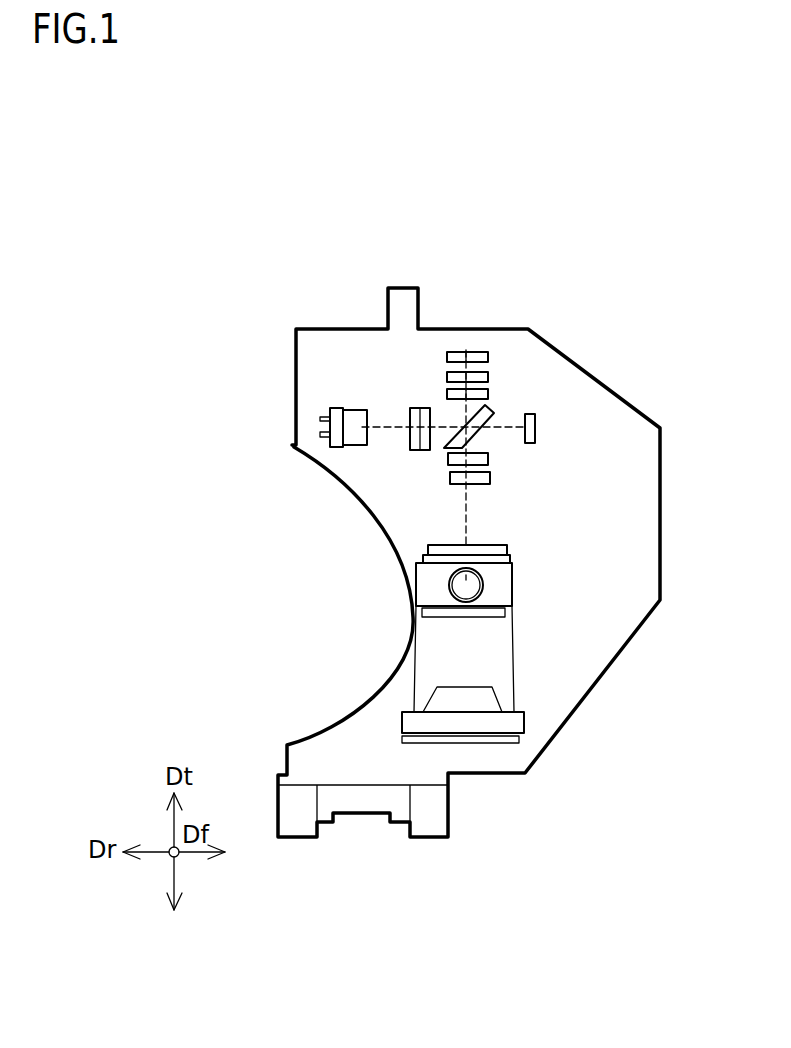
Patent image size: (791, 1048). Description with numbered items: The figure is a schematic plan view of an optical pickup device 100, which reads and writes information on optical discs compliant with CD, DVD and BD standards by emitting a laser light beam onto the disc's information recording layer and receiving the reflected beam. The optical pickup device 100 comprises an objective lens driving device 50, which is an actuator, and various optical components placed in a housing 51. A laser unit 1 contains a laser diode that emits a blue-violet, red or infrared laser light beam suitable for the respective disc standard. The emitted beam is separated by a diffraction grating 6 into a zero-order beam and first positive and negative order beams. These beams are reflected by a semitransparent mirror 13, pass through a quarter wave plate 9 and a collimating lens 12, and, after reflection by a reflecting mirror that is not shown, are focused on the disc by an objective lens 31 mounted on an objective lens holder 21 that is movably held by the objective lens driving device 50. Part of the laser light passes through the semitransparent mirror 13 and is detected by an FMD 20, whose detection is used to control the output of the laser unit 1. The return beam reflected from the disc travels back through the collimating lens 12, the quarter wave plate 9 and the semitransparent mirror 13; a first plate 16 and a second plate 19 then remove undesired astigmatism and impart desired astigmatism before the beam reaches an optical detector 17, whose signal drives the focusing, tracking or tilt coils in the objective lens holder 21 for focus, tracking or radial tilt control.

The optical pickup device 100 is at (403, 220).
The housing 51 is at (296, 384).
The laser unit 1 is at (337, 406).
The diffraction grating 6 is at (431, 407).
The optical detector 17 is at (488, 352).
The second plate 19 is at (488, 372).
The first plate 16 is at (489, 391).
The semitransparent mirror 13 is at (493, 411).
The FMD 20 is at (534, 416).
The quarter wave plate 9 is at (488, 460).
The collimating lens 12 is at (490, 479).
The objective lens driving device 50 is at (423, 583).
The objective lens holder 21 is at (450, 594).
The objective lens 31 is at (423, 612).